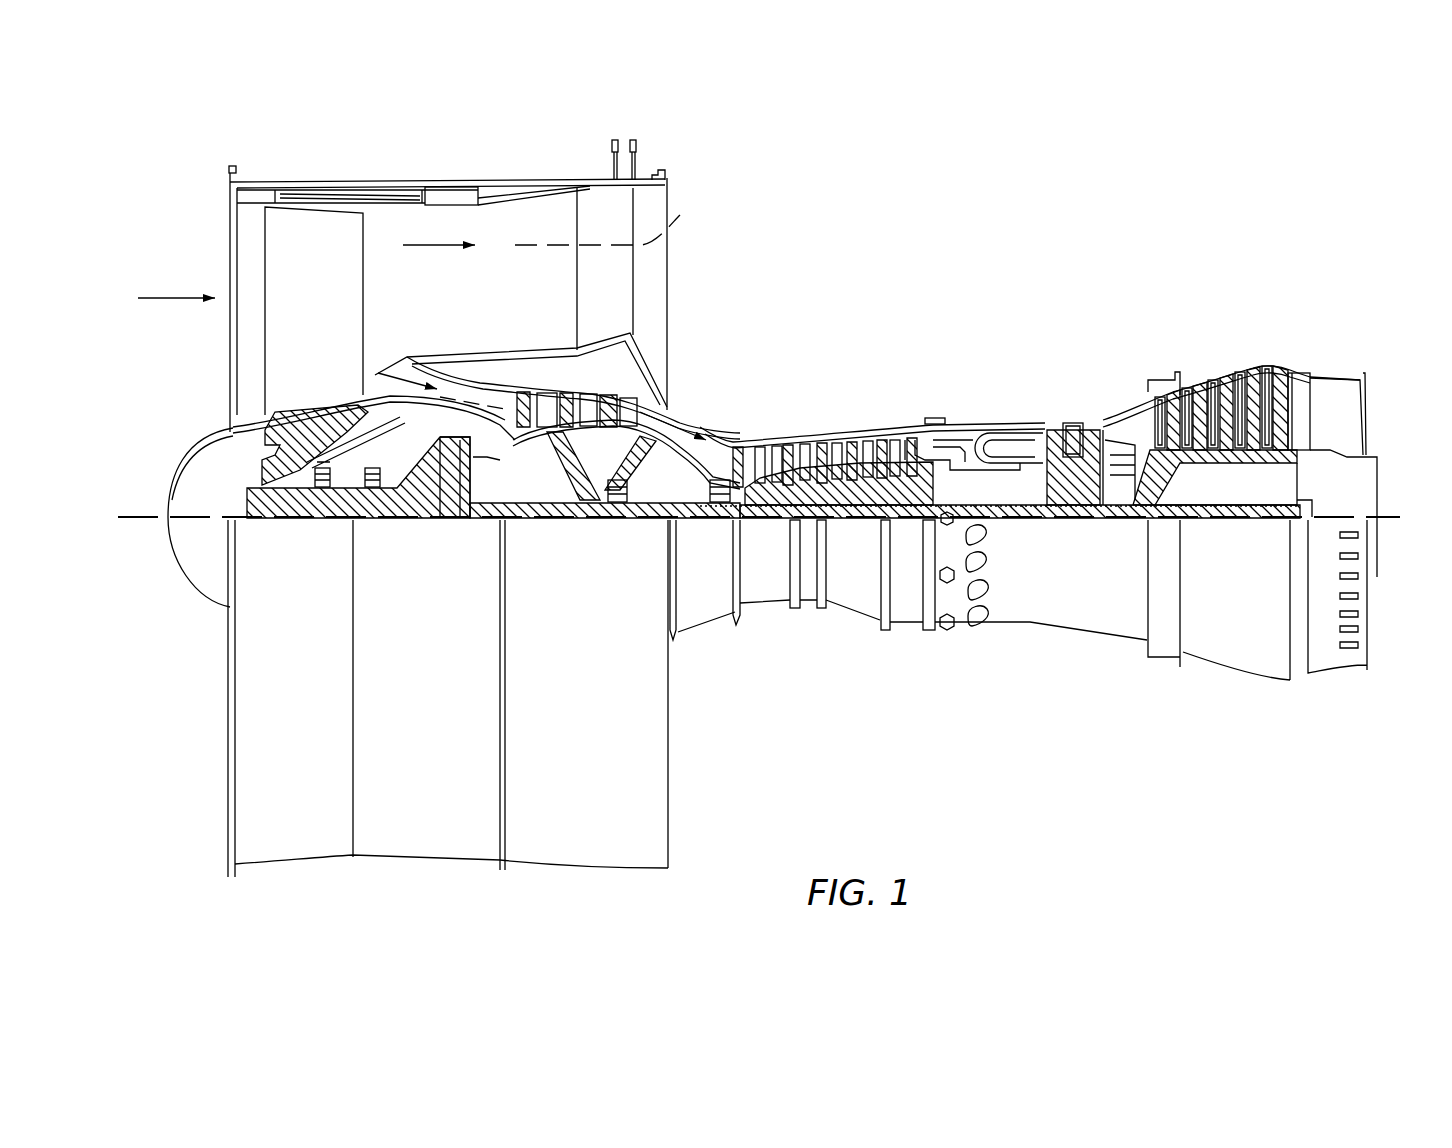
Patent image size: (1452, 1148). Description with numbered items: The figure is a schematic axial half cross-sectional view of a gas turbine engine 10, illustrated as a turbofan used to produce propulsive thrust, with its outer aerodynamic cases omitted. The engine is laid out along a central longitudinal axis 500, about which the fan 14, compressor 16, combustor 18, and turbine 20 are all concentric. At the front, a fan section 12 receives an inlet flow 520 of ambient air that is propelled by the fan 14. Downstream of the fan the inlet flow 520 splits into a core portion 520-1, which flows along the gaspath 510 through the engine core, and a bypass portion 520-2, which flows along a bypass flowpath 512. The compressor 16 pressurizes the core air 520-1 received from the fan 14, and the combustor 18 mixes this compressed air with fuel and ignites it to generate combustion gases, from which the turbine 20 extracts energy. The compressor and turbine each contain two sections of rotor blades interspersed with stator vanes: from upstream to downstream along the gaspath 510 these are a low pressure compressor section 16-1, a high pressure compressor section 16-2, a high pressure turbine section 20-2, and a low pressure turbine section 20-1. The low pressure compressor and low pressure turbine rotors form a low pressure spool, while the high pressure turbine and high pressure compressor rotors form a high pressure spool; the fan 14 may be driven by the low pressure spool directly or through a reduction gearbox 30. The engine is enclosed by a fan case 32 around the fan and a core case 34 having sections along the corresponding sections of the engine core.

The gas turbine engine 10 is at (194, 155).
The fan section 12 is at (300, 176).
The fan 14 is at (318, 250).
The compressor 16 is at (735, 420).
The low pressure compressor section 16-1 is at (620, 385).
The high pressure compressor section 16-2 is at (835, 425).
The combustor 18 is at (1010, 445).
The turbine 20 is at (1322, 272).
The low pressure turbine section 20-1 is at (1228, 357).
The high pressure turbine section 20-2 is at (1072, 405).
The reduction gearbox 30 is at (458, 500).
The fan case 32 is at (428, 825).
The core case 34 is at (900, 645).
The central longitudinal axis 500 is at (132, 514).
The gaspath 510 is at (475, 385).
The bypass flowpath 512 is at (682, 213).
The inlet flow 520 is at (170, 296).
The core portion 520-1 is at (378, 370).
The bypass portion 520-2 is at (432, 243).